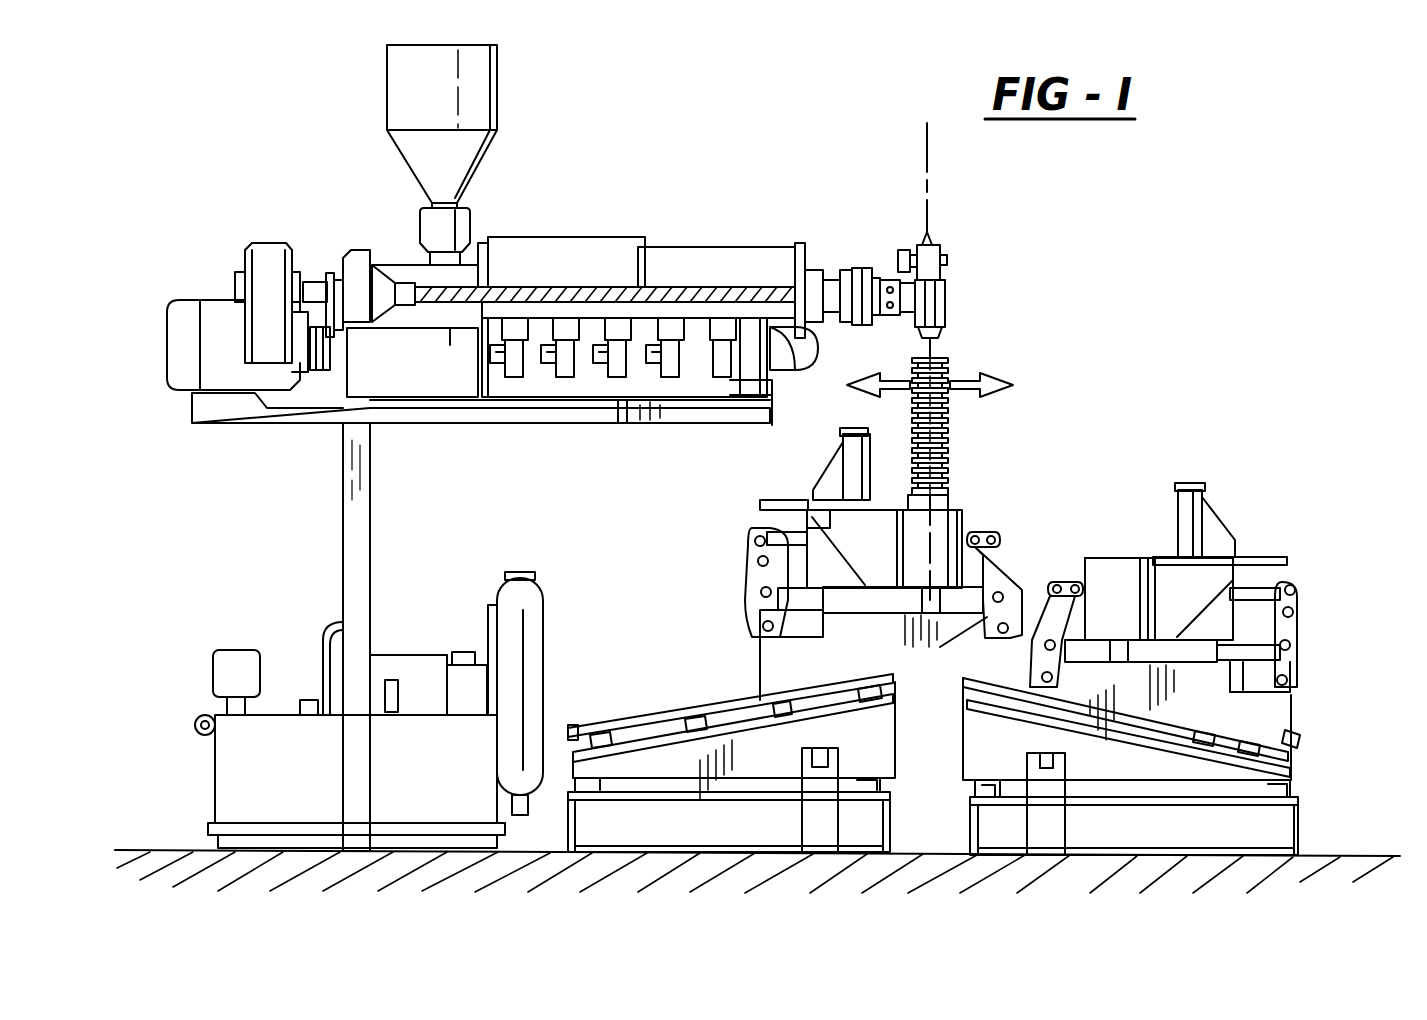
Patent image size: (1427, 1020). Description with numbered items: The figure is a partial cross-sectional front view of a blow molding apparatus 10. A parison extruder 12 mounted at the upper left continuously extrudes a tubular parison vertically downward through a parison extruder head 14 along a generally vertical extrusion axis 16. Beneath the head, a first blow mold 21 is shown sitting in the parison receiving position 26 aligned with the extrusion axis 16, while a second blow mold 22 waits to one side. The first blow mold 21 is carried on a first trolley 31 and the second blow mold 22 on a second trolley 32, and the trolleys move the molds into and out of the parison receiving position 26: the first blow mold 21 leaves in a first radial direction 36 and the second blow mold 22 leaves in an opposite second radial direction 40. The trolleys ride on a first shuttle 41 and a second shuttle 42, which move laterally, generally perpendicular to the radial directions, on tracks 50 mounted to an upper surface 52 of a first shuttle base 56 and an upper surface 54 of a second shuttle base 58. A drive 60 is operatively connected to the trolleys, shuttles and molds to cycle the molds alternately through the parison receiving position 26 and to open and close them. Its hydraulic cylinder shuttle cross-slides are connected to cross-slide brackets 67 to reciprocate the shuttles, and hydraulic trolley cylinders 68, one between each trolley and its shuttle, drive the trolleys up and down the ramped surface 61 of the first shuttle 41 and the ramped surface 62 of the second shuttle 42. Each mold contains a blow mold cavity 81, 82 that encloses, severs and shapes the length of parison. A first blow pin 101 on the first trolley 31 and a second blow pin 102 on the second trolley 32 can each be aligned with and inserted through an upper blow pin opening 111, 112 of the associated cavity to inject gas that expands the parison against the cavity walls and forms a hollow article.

The blow molding apparatus 10 is at (1180, 317).
The parison extruder 12 is at (590, 277).
The parison extruder head 14 is at (945, 305).
The extrusion axis 16 is at (925, 150).
The first blow mold 21 is at (821, 561).
The parison receiving position 26 is at (838, 542).
The second blow mold 22 is at (1147, 572).
The first trolley 31 is at (765, 650).
The second trolley 32 is at (1207, 675).
The first radial direction 36 is at (890, 384).
The second radial direction 40 is at (980, 372).
The first shuttle 41 is at (932, 761).
The second shuttle 42 is at (1260, 833).
The tracks 50 is at (612, 735).
The upper surface of first shuttle base 52 is at (627, 790).
The upper surface of second shuttle base 54 is at (1017, 787).
The first shuttle base 56 is at (745, 825).
The second shuttle base 58 is at (1213, 818).
The drive 60 is at (648, 712).
The ramped surface of first shuttle 61 is at (700, 690).
The ramped surface of second shuttle 62 is at (1228, 735).
The cross-slide bracket 67 is at (1027, 765).
The hydraulic trolley cylinder 68 is at (705, 692).
The blow mold cavity of first blow mold 81 is at (945, 530).
The blow mold cavity of second blow mold 82 is at (1105, 572).
The first blow pin 101 is at (873, 460).
The second blow pin 102 is at (1212, 520).
The upper blow pin opening of first mold cavity 111 is at (940, 500).
The upper blow pin opening of second mold cavity 112 is at (1125, 570).